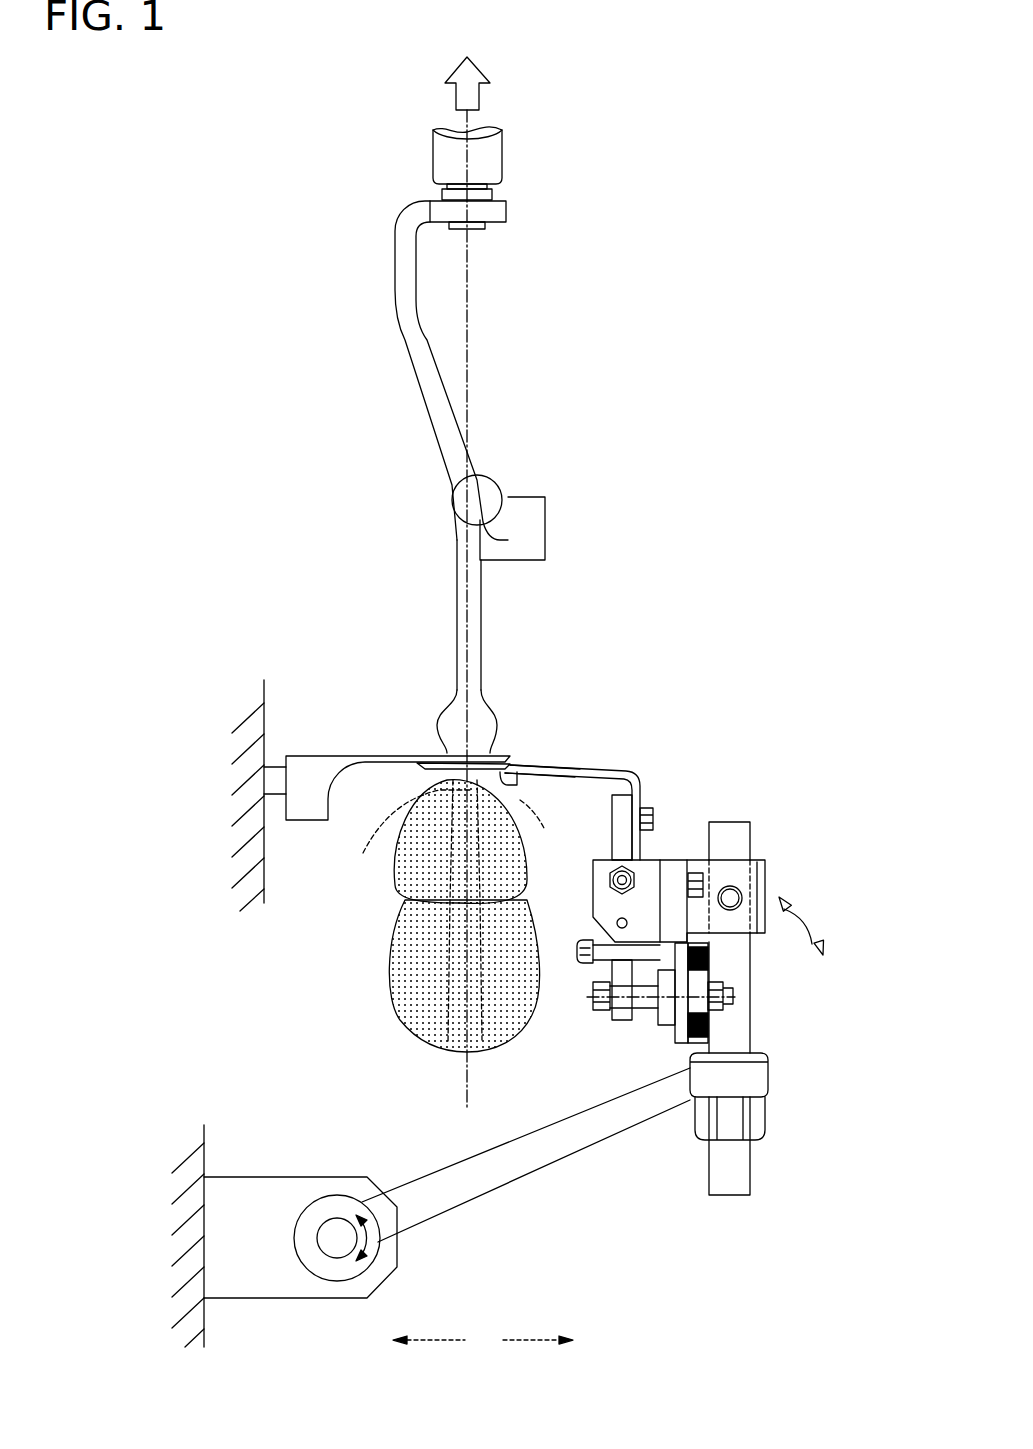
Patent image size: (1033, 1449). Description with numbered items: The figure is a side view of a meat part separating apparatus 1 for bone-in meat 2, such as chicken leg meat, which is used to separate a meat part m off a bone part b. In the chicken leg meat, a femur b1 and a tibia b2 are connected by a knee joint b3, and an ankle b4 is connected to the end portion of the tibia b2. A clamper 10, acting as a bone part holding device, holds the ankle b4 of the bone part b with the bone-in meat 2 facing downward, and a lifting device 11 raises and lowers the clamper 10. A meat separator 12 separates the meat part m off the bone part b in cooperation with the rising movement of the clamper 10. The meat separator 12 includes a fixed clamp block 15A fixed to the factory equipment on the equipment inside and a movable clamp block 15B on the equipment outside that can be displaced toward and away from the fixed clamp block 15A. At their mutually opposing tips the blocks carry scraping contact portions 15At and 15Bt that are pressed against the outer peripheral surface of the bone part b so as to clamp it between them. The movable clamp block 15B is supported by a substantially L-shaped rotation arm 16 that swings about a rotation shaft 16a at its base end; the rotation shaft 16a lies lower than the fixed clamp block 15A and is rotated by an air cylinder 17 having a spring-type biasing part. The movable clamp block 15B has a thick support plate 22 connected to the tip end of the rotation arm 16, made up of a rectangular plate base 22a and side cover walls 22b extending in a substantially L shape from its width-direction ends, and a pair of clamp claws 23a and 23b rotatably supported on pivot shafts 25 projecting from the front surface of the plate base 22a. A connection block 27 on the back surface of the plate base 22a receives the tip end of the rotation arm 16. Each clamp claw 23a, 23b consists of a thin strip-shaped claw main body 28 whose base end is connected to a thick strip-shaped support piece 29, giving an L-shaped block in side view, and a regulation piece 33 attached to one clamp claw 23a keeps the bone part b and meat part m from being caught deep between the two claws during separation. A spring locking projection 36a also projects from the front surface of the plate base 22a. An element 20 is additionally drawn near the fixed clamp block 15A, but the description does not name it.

The meat part separating apparatus 1 is at (631, 139).
The lifting device 11 is at (503, 157).
The clamper 10 is at (418, 388).
The ankle b4 is at (490, 480).
The bone part b is at (408, 746).
The tibia b2 is at (457, 642).
The knee joint b3 is at (438, 732).
The femur b1 is at (440, 950).
The meat part m is at (400, 1010).
The bone-in meat 2 is at (396, 932).
The support 20 is at (400, 762).
The fixed clamp block 15A is at (359, 730).
The scraping contact portion 15At is at (321, 755).
The movable clamp block 15B is at (573, 724).
The scraping contact portion 15Bt is at (618, 850).
The clamp claw 23a is at (545, 772).
The clamp claw 23b is at (540, 775).
The regulation piece 33 is at (520, 765).
The claw main body 28 is at (613, 808).
The meat separator 12 is at (698, 989).
The support plate 22 is at (693, 1017).
The plate base 22a is at (690, 975).
The side cover wall 22b is at (620, 960).
The support piece 29 is at (613, 870).
The connection block 27 is at (768, 885).
The pivot shaft 25 is at (735, 997).
The spring locking projection 36a is at (600, 1010).
The rotation arm 16 is at (612, 1130).
The rotation shaft 16a is at (333, 1250).
The air cylinder 17 is at (260, 1265).